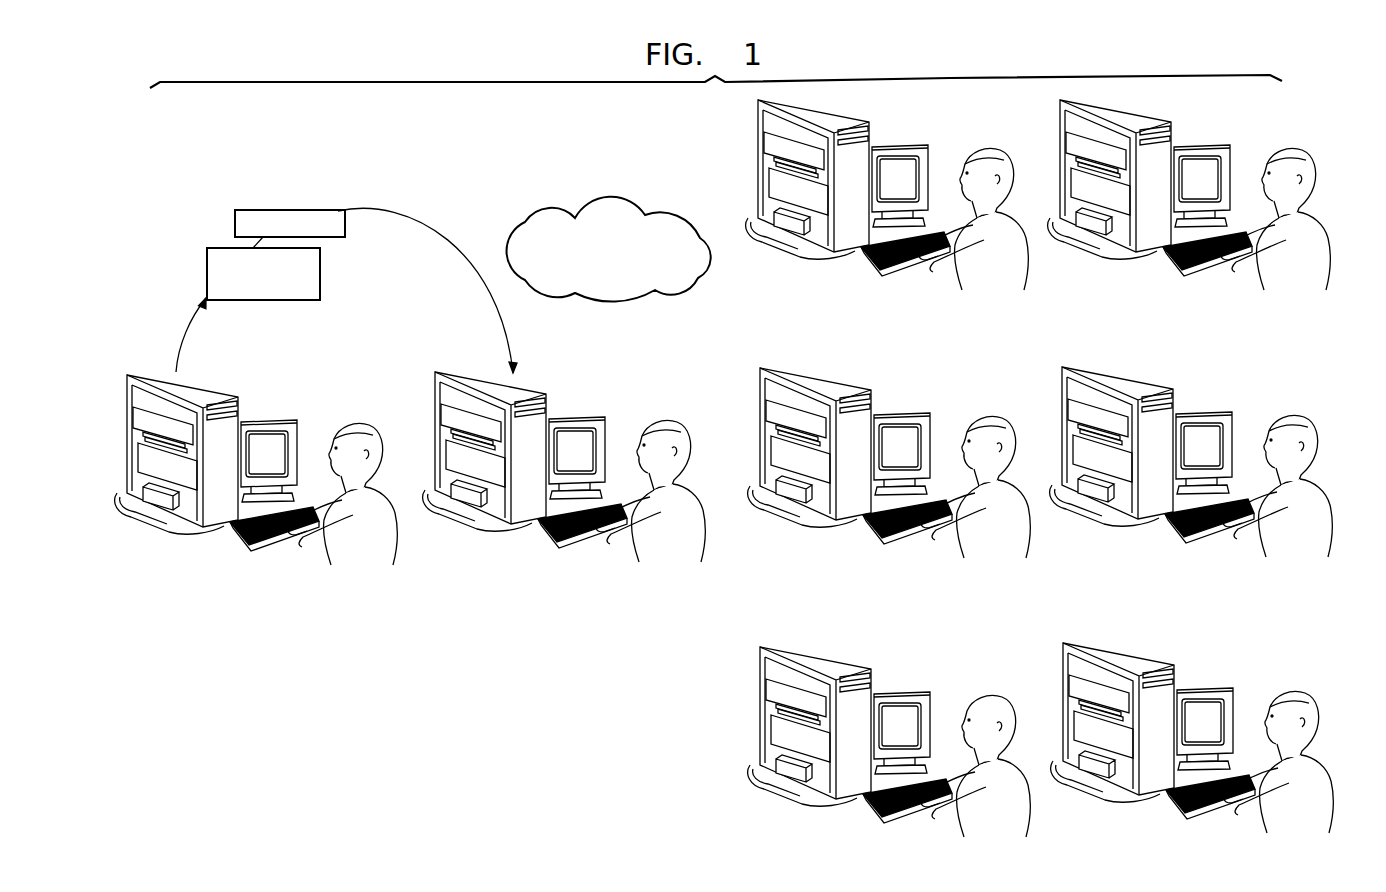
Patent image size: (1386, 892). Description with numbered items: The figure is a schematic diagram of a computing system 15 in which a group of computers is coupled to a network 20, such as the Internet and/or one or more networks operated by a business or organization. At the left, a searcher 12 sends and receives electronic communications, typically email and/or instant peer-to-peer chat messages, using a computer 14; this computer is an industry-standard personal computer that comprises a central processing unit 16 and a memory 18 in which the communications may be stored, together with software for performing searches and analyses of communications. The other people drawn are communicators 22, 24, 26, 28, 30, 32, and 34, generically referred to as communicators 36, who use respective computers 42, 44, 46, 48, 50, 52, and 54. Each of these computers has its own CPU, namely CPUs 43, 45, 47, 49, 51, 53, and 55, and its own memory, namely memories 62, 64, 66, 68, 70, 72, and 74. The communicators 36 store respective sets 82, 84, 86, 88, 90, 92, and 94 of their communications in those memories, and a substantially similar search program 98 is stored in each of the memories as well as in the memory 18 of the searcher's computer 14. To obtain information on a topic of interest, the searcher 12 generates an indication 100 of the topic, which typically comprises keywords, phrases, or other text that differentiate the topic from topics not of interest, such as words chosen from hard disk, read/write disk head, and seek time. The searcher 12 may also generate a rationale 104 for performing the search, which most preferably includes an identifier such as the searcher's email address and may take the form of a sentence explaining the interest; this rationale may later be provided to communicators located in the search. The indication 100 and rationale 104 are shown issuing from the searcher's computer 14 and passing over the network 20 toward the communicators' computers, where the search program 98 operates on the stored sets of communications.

The searcher 12 is at (342, 479).
The computer 14 is at (217, 455).
The computing system 15 is at (348, 645).
The central processing unit 16 is at (189, 498).
The memory 18 is at (184, 431).
The network 20 is at (620, 198).
The communicator 22 is at (650, 476).
The communicator 24 is at (973, 210).
The communicator 26 is at (975, 479).
The communicator 28 is at (975, 755).
The communicator 30 is at (1275, 209).
The communicator 32 is at (1277, 479).
The communicator 34 is at (1278, 753).
The communicators 36 is at (530, 643).
The computer 42 is at (525, 448).
The CPU 43 is at (497, 498).
The computer 44 is at (848, 180).
The CPU 45 is at (820, 226).
The computer 46 is at (850, 447).
The CPU 47 is at (822, 494).
The computer 48 is at (850, 726).
The CPU 49 is at (822, 773).
The computer 50 is at (1150, 179).
The CPU 51 is at (1122, 226).
The computer 52 is at (1152, 446).
The CPU 53 is at (1124, 493).
The computer 54 is at (1153, 722).
The CPU 55 is at (1125, 769).
The memory 62 is at (492, 427).
The memory 64 is at (815, 155).
The memory 66 is at (817, 423).
The memory 68 is at (817, 702).
The memory 70 is at (1117, 155).
The memory 72 is at (1119, 422).
The memory 74 is at (1120, 698).
The set of communications 82 is at (498, 452).
The set of communications 84 is at (821, 180).
The set of communications 86 is at (823, 448).
The set of communications 88 is at (823, 727).
The set of communications 90 is at (1123, 180).
The set of communications 92 is at (1125, 447).
The set of communications 94 is at (1126, 723).
The search program 98 is at (186, 468).
The indication 100 is at (207, 266).
The rationale 104 is at (285, 210).